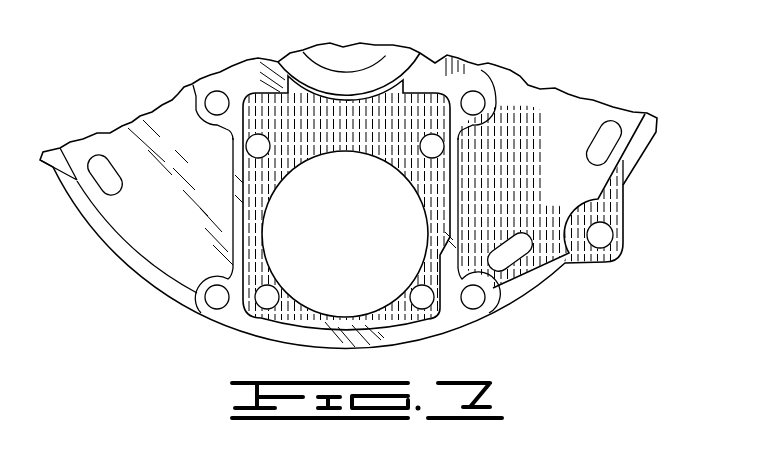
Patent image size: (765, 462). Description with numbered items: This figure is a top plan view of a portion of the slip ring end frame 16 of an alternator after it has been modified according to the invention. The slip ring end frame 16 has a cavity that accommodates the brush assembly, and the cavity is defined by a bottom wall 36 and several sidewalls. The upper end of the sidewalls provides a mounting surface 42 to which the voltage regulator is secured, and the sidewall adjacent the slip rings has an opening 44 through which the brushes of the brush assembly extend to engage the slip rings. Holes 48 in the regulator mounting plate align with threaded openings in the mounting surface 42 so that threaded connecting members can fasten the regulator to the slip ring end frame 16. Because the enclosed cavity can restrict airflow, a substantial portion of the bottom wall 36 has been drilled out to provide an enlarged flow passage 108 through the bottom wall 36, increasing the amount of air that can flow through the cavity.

The slip ring end frame 16 is at (137, 272).
The bottom wall 36 is at (308, 133).
The mounting surface 42 is at (427, 322).
The opening 44 is at (392, 82).
The holes 48 is at (217, 306).
The enlarged flow passage 108 is at (365, 241).